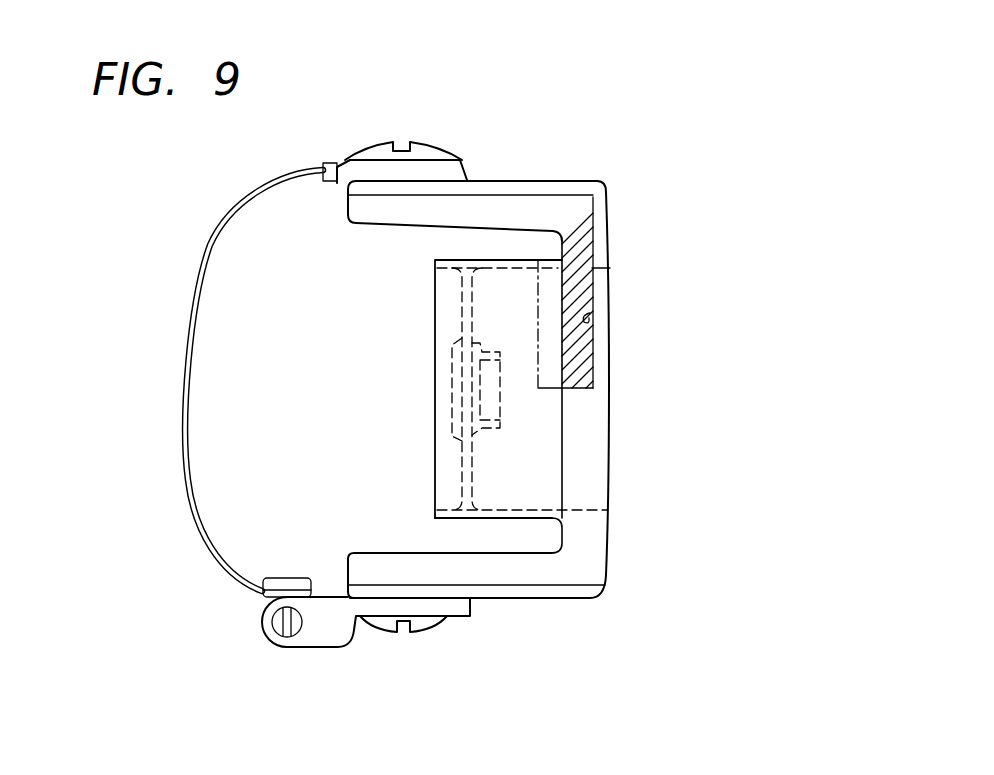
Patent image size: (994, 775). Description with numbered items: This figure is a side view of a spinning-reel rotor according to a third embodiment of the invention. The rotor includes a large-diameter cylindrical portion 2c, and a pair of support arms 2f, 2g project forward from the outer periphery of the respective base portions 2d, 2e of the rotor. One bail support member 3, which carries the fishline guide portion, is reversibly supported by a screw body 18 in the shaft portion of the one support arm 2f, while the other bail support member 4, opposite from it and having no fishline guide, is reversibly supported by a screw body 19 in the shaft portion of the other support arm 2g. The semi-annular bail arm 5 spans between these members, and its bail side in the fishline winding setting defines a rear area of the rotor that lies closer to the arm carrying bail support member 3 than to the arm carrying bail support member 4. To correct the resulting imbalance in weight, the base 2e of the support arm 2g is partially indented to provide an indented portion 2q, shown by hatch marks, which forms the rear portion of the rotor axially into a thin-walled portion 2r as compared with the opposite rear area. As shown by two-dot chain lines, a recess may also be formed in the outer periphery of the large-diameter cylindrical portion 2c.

The large-diameter cylindrical portion 2c is at (494, 266).
The base portion 2d is at (607, 562).
The base portion 2e is at (608, 203).
The support arm 2f is at (370, 565).
The support arm 2g is at (350, 208).
The indented portion 2q is at (586, 320).
The thin-walled portion 2r is at (600, 252).
The bail support member 3 is at (262, 630).
The bail support member 4 is at (348, 158).
The semi-annular bail arm 5 is at (196, 278).
The screw body 18 is at (428, 633).
The screw body 19 is at (433, 150).